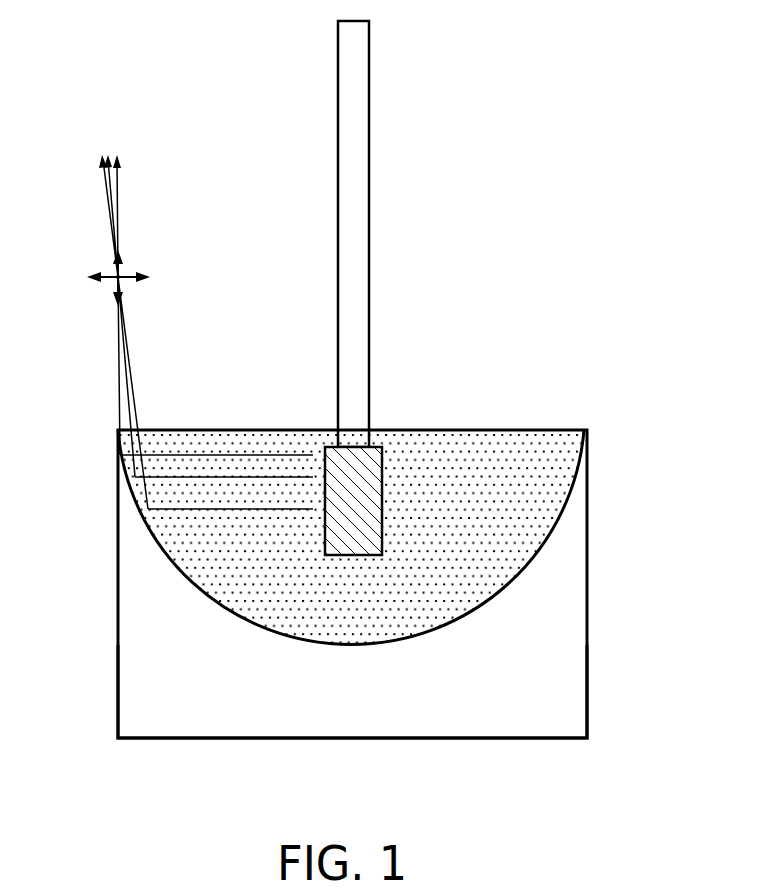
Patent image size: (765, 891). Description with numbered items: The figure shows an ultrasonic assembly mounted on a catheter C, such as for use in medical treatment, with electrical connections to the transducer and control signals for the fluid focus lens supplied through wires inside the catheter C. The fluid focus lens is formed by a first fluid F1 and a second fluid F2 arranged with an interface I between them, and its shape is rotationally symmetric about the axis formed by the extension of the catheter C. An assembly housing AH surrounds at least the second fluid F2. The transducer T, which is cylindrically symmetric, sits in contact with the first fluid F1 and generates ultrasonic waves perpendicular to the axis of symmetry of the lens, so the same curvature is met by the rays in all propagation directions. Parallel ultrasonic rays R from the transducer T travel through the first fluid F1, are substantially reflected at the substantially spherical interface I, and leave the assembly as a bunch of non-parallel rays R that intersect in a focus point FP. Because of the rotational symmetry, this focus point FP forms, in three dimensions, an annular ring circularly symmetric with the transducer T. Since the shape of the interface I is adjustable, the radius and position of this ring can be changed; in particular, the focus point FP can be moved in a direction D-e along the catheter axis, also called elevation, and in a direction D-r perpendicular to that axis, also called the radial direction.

The ultrasonic rays R is at (128, 180).
The catheter C is at (360, 191).
The transducer T is at (372, 452).
The first fluid F1 is at (502, 440).
The second fluid F2 is at (578, 667).
The interface I is at (452, 634).
The assembly housing AH is at (118, 632).
The focus point FP is at (122, 284).
The elevation direction D-e is at (120, 257).
The radial direction D-r is at (92, 273).